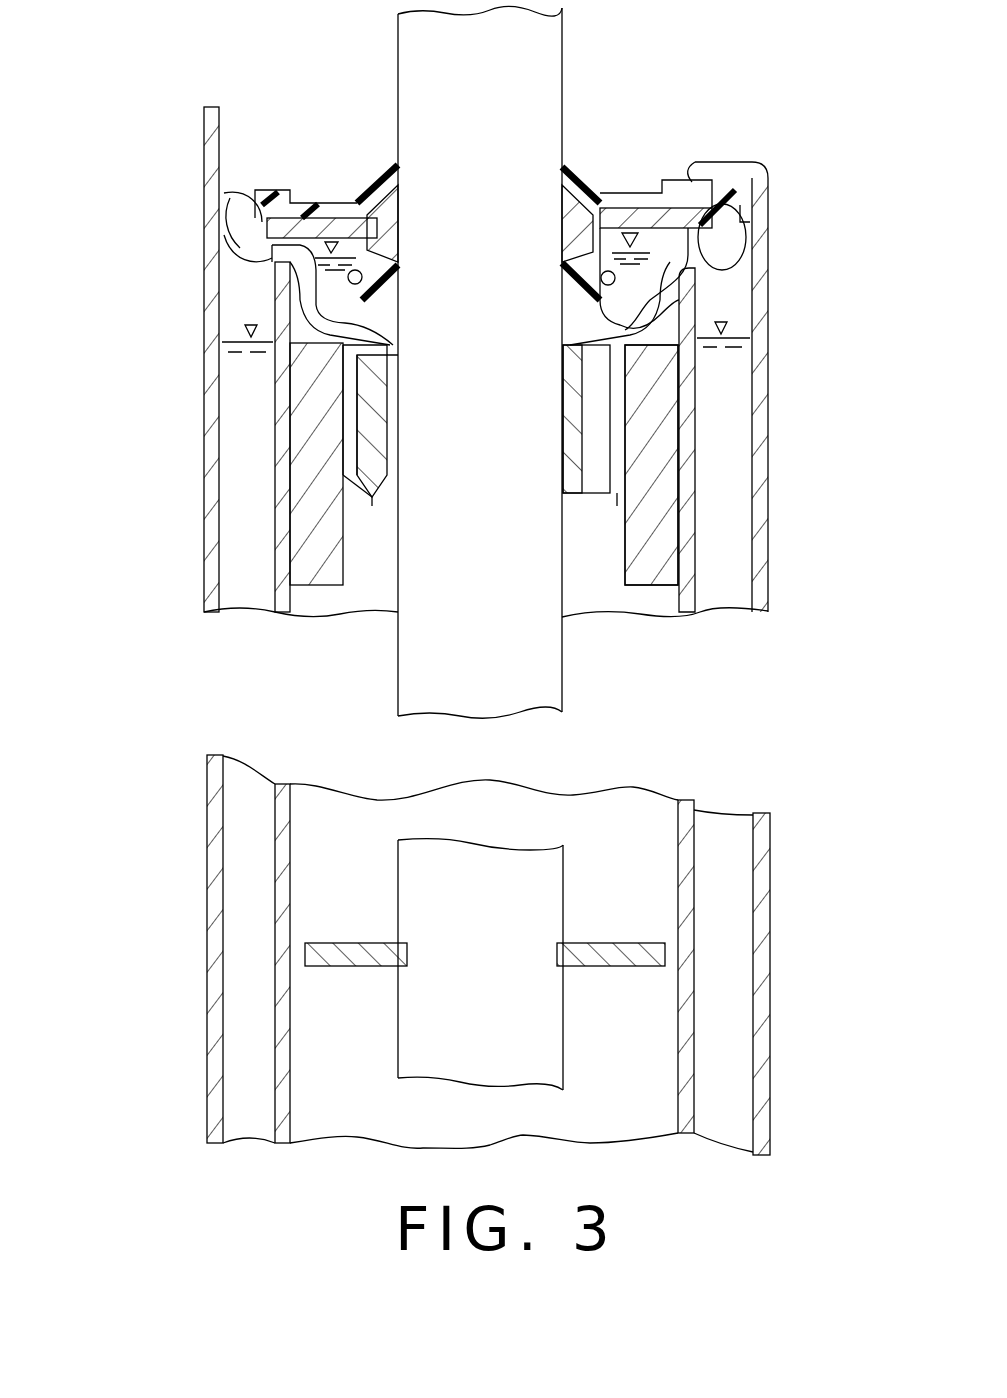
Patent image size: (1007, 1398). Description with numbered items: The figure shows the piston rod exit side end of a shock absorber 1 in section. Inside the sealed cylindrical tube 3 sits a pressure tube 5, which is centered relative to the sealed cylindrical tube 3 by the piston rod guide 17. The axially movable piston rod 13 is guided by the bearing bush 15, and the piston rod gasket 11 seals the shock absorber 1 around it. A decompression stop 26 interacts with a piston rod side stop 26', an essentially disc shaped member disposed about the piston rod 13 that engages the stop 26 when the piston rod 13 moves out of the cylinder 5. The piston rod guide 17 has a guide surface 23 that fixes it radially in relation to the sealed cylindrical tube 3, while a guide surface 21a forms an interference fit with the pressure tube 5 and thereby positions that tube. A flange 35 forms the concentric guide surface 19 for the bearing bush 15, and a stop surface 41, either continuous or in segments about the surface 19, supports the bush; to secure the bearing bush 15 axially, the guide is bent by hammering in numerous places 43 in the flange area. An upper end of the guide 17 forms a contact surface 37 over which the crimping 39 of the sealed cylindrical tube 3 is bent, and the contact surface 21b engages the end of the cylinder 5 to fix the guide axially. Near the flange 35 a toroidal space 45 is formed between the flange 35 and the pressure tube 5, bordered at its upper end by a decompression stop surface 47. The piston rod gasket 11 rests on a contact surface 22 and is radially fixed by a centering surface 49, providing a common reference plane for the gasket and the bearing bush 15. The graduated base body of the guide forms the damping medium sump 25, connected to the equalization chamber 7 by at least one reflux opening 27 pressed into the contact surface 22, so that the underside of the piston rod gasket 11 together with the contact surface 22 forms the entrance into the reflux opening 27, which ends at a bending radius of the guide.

The shock absorber 1 is at (140, 648).
The sealed cylindrical tube 3 is at (762, 503).
The pressure tube 5 is at (687, 597).
The equalization chamber 7 is at (240, 568).
The piston rod gasket 11 is at (632, 200).
The piston rod 13 is at (543, 57).
The bearing bush 15 is at (340, 458).
The piston rod guide 17 is at (717, 240).
The concentric guide surface 19 is at (598, 372).
The guide surface 21a is at (668, 300).
The contact surface 21b is at (280, 318).
The contact surface 22 is at (700, 270).
The guide surface 23 is at (263, 216).
The damping medium sump 25 is at (342, 330).
The decompression stop 26 is at (755, 465).
The piston rod side stop 26' is at (583, 966).
The reflux opening 27 is at (262, 268).
The flange 35 is at (597, 447).
The contact surface 37 is at (222, 192).
The crimping 39 is at (722, 165).
The stop surface 41 is at (390, 348).
The hammered places 43 is at (372, 500).
The toroidal space 45 is at (620, 497).
The decompression stop surface 47 is at (700, 335).
The centering surface 49 is at (262, 253).